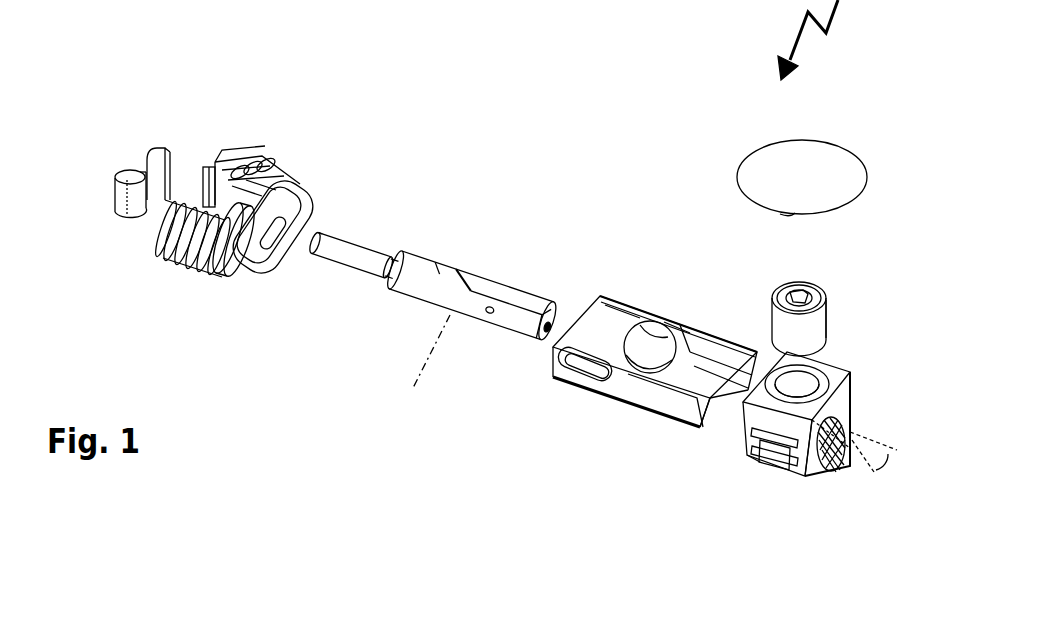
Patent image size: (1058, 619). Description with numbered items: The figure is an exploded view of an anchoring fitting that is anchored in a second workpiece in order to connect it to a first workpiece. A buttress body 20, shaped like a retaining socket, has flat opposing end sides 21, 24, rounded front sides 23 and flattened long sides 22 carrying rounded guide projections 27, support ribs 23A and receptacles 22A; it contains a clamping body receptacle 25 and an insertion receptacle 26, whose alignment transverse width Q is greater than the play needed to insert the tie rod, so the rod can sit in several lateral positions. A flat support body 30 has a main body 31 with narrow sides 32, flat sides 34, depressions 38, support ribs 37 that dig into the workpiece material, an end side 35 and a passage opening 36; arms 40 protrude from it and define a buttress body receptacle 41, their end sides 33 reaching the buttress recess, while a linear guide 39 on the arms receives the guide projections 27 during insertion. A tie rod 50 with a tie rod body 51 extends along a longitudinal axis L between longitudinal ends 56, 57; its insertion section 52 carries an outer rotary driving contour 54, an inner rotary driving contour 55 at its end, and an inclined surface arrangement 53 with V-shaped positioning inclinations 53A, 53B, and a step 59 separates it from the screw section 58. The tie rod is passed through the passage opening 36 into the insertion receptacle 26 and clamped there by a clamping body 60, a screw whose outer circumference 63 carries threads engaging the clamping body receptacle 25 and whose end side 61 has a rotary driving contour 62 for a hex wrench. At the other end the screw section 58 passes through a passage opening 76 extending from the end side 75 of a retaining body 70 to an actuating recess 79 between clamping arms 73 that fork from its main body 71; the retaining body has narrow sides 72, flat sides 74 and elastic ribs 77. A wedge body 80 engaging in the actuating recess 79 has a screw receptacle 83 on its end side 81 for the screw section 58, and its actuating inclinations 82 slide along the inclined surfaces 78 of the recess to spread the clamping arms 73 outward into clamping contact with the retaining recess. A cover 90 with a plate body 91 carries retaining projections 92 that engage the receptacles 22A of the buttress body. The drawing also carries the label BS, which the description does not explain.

The buttress body 20 is at (783, 450).
The end side 21 is at (808, 478).
The longitudinal sides 22 is at (778, 471).
The receptacles 22A is at (740, 457).
The front sides 23 is at (747, 412).
The support ribs 23A is at (850, 466).
The end side 24 is at (829, 378).
The clamping body receptacle 25 is at (812, 370).
The insertion receptacle 26 is at (855, 433).
The guide projections 27 is at (768, 468).
The bore axis BS is at (852, 436).
The alignment transverse width Q is at (887, 460).
The support body 30 is at (638, 371).
The main body 31 is at (630, 318).
The narrow sides 32 is at (643, 400).
The end sides 33 is at (713, 428).
The flat sides 34 is at (582, 390).
The end side 35 is at (637, 262).
The passage opening 36 is at (667, 313).
The support ribs 37 is at (555, 375).
The depressions 38 is at (627, 312).
The linear guide 39 is at (713, 343).
The arms 40 is at (667, 410).
The buttress body receptacle 41 is at (718, 385).
The tie rod 50 is at (449, 307).
The tie rod body 51 is at (469, 294).
The insertion section 52 is at (547, 321).
The inclined surface arrangement 53 is at (489, 310).
The positioning inclination 53A is at (511, 300).
The positioning inclination 53B is at (463, 280).
The rotary driving contour 54 is at (437, 268).
The rotary driving contour 55 is at (547, 326).
The longitudinal end 56 is at (539, 326).
The longitudinal end 57 is at (320, 233).
The screw section 58 is at (350, 254).
The step 59 is at (390, 268).
The longitudinal axis L is at (426, 365).
The clamping body 60 is at (808, 292).
The end side 61 is at (778, 297).
The rotary driving contour 62 is at (798, 291).
The outer circumference 63 is at (815, 350).
The retaining body 70 is at (231, 177).
The main body 71 is at (227, 267).
The narrow sides 72 is at (247, 170).
The clamping arms 73 is at (244, 160).
The flat sides 74 is at (293, 172).
The end side 75 is at (314, 200).
The passage opening 76 is at (286, 258).
The ribs 77 is at (178, 257).
The inclined surfaces 78 is at (207, 160).
The actuating recess 79 is at (205, 190).
The wedge body 80 is at (105, 158).
The end side 81 is at (143, 147).
The actuating inclinations 82 is at (133, 200).
The screw receptacle 83 is at (163, 157).
The cover 90 is at (745, 145).
The plate body 91 is at (848, 160).
The retaining projections 92 is at (785, 214).